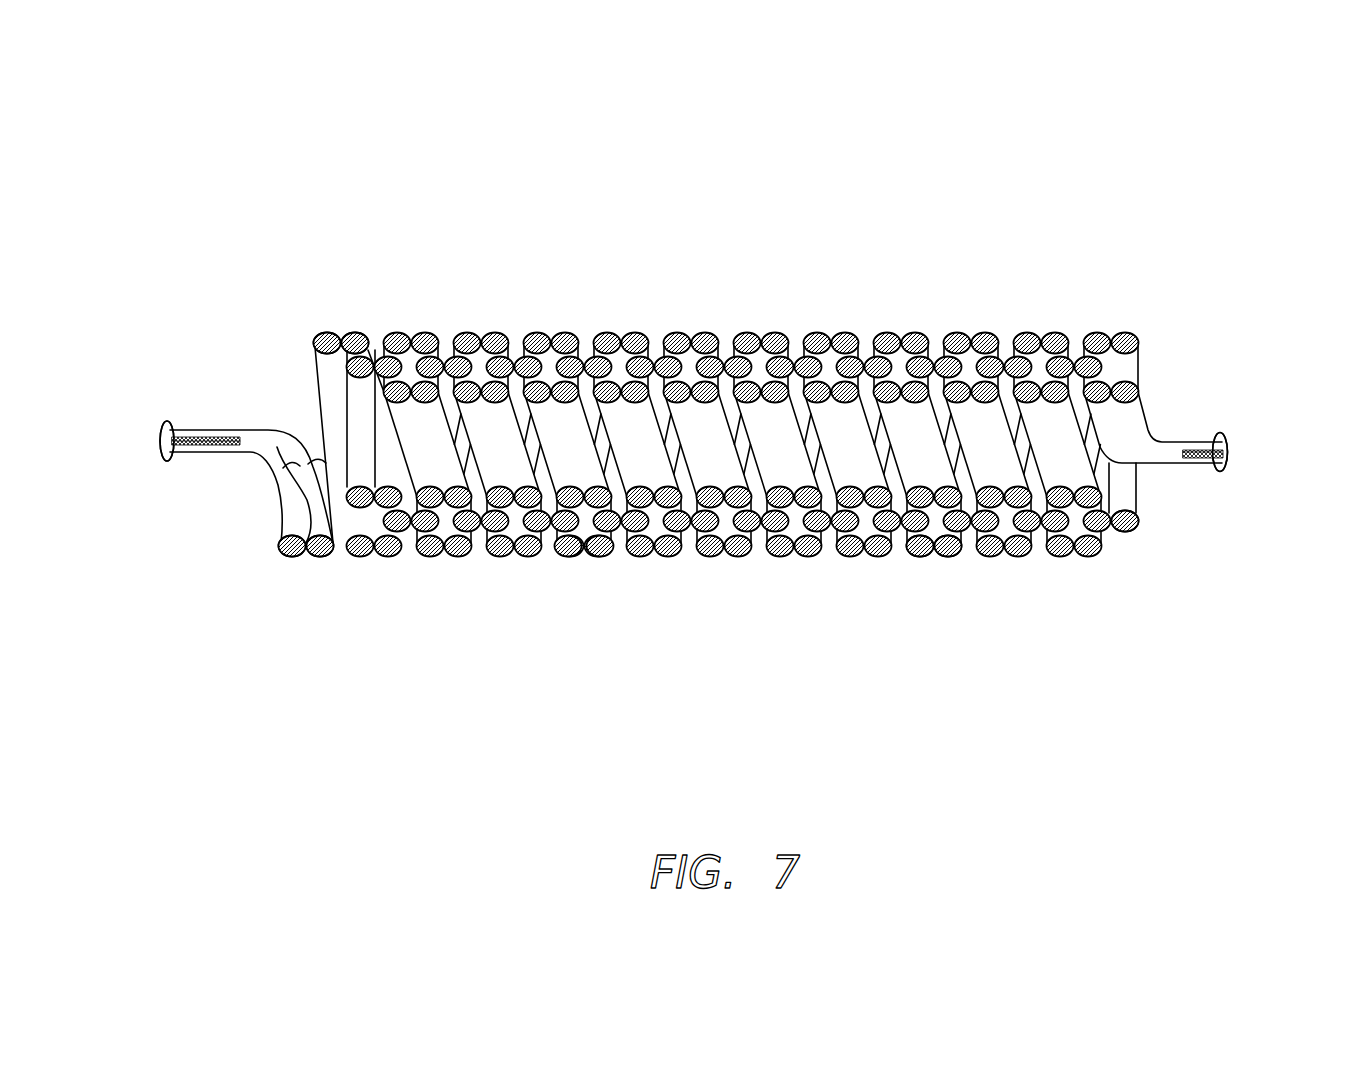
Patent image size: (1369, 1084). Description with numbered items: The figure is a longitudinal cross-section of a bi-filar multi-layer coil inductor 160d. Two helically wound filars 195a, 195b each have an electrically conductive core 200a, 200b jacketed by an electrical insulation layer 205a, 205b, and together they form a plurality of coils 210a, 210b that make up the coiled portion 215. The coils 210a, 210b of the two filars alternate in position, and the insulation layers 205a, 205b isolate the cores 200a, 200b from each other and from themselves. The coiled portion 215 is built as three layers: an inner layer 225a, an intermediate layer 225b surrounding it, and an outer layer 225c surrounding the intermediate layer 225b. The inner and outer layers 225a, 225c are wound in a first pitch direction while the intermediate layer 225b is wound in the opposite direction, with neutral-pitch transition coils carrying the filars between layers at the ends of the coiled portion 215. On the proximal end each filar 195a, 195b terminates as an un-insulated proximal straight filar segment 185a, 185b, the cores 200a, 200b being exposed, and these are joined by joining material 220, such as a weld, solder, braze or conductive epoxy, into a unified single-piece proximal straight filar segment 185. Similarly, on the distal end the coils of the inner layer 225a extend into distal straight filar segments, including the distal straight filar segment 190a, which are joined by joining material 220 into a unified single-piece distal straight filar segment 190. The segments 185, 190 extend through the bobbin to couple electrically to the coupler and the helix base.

The bi-filar multi-layer coil inductor 160d is at (858, 226).
The unified single-piece proximal straight filar segment 185 is at (182, 456).
The proximal straight filar segment 185a is at (188, 453).
The proximal straight filar segment 185b is at (178, 427).
The unified single-piece distal straight filar segment 190 is at (1200, 462).
The distal straight filar segment 190a is at (1150, 455).
The helically wound filar 195a is at (327, 333).
The helically wound filar 195b is at (353, 333).
The electrically conductive core 200a is at (283, 482).
The electrically conductive core 200b is at (198, 430).
The electrical insulation layer 205a is at (293, 482).
The electrical insulation layer 205b is at (289, 428).
The coil 210a is at (358, 471).
The coil 210b is at (412, 470).
The coiled portion 215 is at (1145, 648).
The joining material 220 is at (208, 454).
The inner layer 225a is at (1112, 550).
The intermediate layer 225b is at (1107, 372).
The outer layer 225c is at (1138, 350).